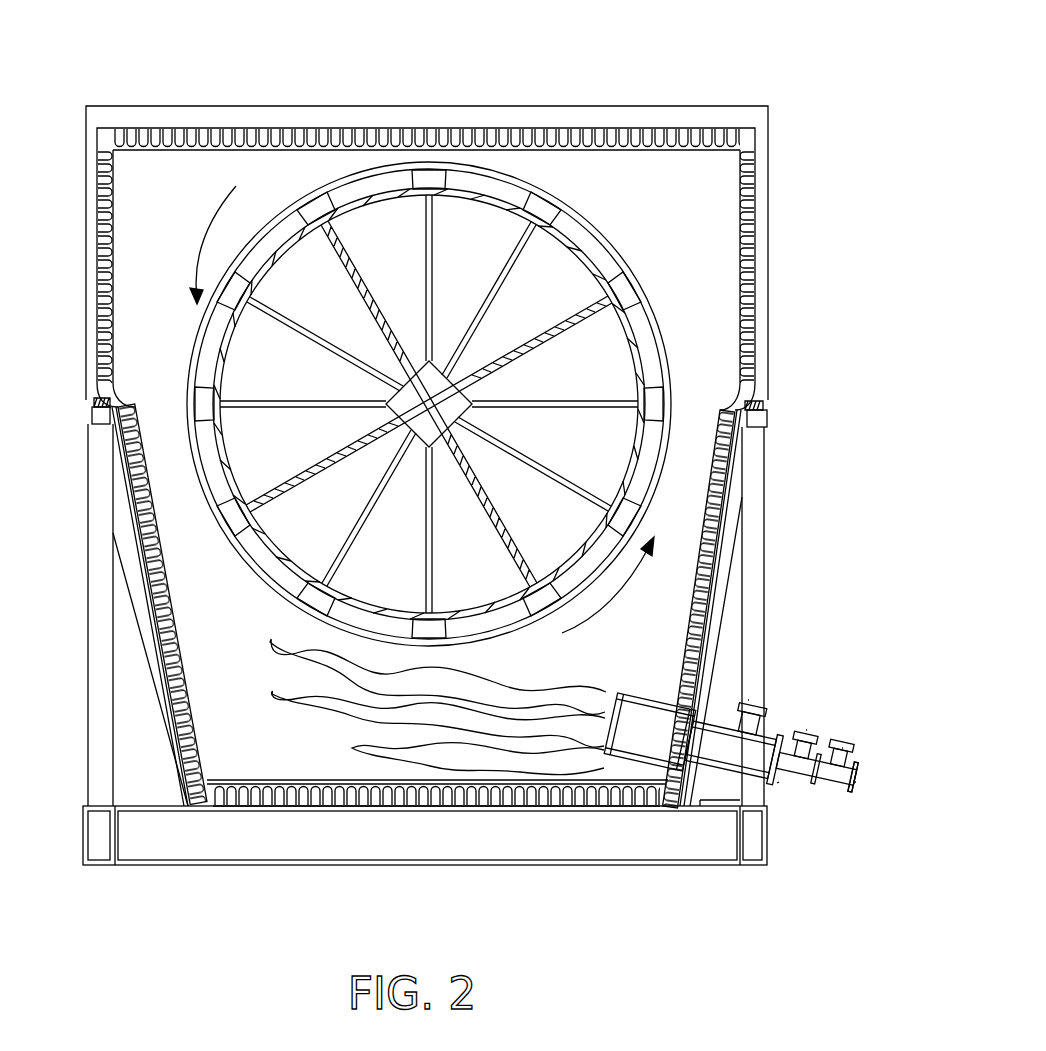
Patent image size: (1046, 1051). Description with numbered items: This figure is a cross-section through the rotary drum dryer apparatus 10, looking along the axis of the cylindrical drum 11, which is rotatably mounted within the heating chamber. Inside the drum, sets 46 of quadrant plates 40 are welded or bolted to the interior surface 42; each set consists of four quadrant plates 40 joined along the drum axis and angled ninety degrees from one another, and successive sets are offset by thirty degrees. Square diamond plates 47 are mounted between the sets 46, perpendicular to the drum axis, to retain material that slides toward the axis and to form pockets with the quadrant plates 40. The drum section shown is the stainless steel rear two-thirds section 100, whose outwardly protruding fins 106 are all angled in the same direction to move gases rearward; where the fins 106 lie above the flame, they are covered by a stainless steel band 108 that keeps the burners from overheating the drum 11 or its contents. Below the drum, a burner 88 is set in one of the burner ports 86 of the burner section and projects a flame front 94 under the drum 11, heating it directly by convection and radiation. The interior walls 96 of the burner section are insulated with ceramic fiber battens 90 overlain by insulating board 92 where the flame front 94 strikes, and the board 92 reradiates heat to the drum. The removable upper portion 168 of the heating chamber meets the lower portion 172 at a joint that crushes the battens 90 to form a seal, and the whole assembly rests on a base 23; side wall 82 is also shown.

The rotary drum dryer apparatus 10 is at (427, 201).
The cylindrical drum 11 is at (423, 411).
The base frame 23 is at (612, 866).
The quadrant plates 40 is at (580, 318).
The interior surface 42 is at (456, 200).
The sets of quadrant plates 46 is at (512, 258).
The square diamond plates 47 is at (421, 355).
The side wall 82 is at (113, 300).
The burner ports 86 is at (734, 713).
The burners 88 is at (703, 800).
The ceramic fiber battens 90 is at (262, 140).
The insulating board 92 is at (205, 692).
The flame front 94 is at (252, 655).
The interior walls 96 is at (290, 780).
The rear two-thirds section 100 is at (214, 373).
The fins 106 is at (660, 395).
The band 108 is at (194, 347).
The upper portion of the heating chamber 168 is at (694, 106).
The lower portion of the heating chamber 172 is at (88, 470).